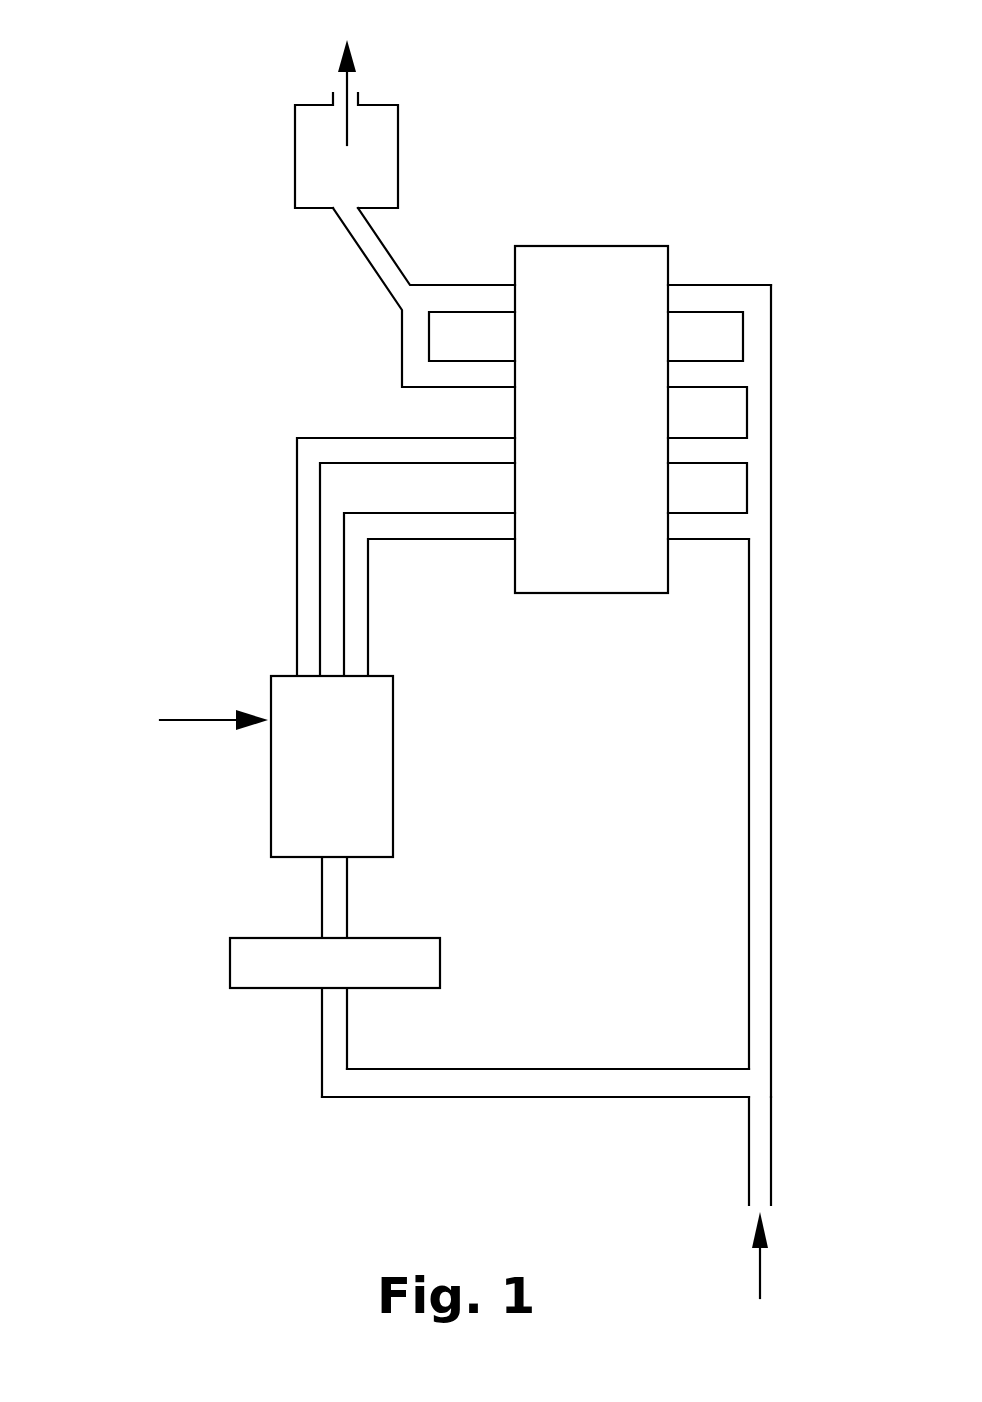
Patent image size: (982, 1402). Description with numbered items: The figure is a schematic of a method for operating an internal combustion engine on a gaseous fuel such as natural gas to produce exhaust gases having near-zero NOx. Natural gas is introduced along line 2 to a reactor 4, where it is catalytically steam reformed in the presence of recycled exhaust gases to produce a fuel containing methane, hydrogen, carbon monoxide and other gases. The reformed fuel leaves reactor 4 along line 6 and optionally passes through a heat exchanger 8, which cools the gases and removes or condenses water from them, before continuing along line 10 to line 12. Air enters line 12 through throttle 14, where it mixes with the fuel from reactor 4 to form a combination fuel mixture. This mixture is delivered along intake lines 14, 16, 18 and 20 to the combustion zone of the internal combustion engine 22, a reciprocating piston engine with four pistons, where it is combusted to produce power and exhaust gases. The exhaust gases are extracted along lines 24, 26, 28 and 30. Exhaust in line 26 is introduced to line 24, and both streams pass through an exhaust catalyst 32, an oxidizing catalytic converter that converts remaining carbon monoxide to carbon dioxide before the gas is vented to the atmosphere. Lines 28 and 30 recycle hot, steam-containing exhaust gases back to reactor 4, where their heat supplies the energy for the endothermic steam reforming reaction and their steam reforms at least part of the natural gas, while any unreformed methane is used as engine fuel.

The line 2 is at (203, 722).
The reactor 4 is at (393, 754).
The line 6 is at (347, 892).
The heat exchanger 8 is at (440, 958).
The line 10 is at (538, 1098).
The line 12 is at (772, 830).
The throttle 14 is at (700, 511).
The intake line 16 is at (700, 436).
The intake line 18 is at (700, 358).
The intake line 20 is at (700, 283).
The internal combustion engine 22 is at (592, 245).
The line 24 is at (464, 283).
The line 26 is at (464, 358).
The line 28 is at (464, 436).
The line 30 is at (464, 511).
The exhaust catalyst 32 is at (380, 150).